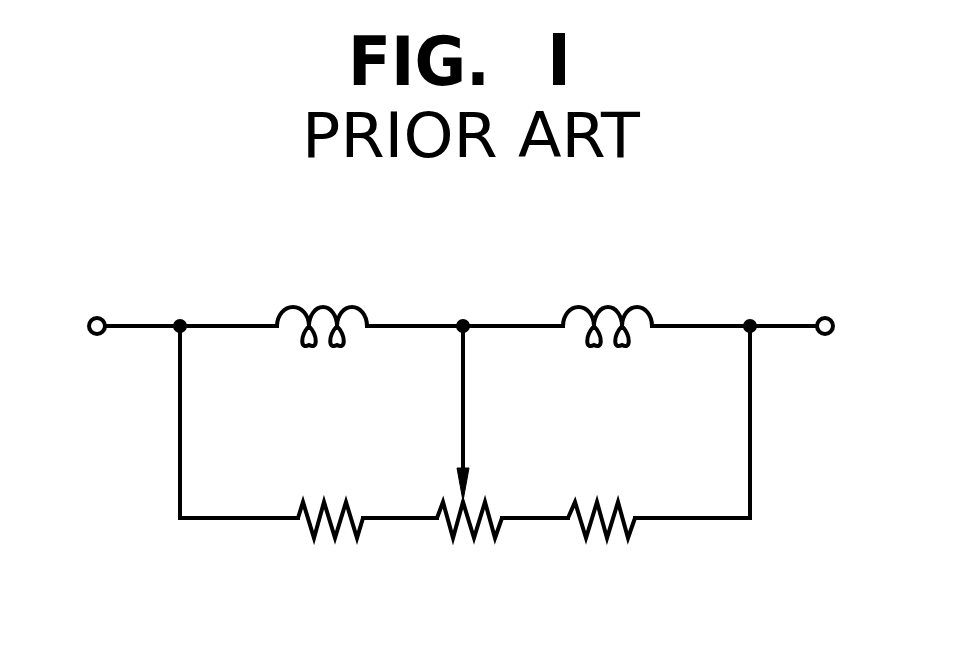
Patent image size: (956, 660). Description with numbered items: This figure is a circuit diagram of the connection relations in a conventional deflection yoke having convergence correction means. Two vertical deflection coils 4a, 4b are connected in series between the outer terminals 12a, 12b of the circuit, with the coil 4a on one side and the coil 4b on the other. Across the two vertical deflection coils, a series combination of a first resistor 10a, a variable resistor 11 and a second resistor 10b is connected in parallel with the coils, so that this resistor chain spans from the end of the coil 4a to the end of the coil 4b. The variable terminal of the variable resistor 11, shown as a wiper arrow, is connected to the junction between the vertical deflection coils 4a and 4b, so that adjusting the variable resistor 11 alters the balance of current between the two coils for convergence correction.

The input terminal 12a is at (97, 317).
The output terminal 12b is at (826, 318).
The vertical deflection coil 4a is at (320, 305).
The vertical deflection coil 4b is at (605, 305).
The resistor 10a is at (330, 548).
The resistor 10b is at (600, 548).
The variable resistor 11 is at (460, 548).